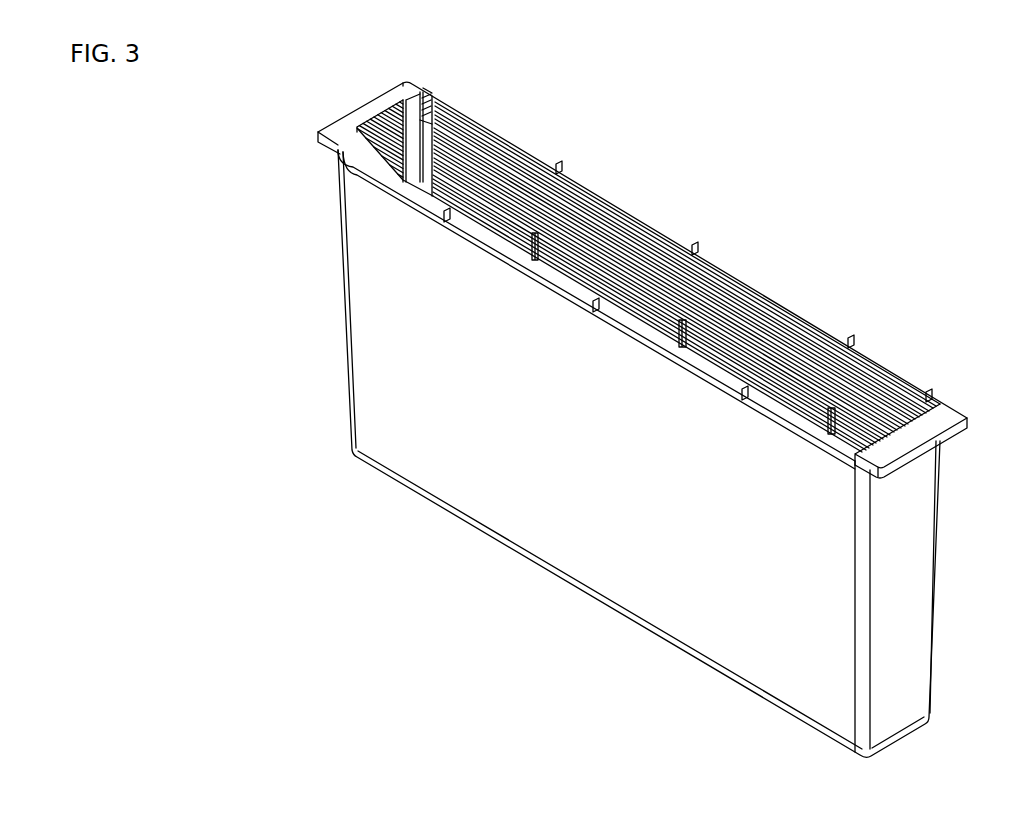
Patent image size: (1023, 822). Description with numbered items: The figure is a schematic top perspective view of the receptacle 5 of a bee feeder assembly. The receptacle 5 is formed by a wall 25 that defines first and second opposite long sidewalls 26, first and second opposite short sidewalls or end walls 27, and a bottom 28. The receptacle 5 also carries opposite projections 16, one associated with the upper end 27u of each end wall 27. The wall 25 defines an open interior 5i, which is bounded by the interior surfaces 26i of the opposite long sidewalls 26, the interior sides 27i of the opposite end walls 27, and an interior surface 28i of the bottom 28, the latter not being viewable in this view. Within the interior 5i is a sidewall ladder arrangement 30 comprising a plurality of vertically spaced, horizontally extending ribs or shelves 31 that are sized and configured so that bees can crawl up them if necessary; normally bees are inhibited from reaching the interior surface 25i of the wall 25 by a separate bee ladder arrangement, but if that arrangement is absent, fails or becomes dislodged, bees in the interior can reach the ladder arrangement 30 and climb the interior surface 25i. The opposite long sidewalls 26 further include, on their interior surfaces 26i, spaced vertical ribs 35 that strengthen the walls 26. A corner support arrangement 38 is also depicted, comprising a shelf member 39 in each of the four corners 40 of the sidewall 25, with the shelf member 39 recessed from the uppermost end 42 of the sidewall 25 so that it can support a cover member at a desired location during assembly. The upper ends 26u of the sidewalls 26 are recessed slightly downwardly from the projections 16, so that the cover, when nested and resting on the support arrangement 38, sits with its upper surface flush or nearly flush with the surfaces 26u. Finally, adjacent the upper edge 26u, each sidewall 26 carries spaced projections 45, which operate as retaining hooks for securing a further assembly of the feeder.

The receptacle 5 is at (708, 212).
The open interior 5i is at (628, 240).
The projections 16 is at (361, 112).
The wall 25 is at (457, 493).
The interior surface of wall 25i is at (494, 158).
The long sidewalls 26 is at (602, 442).
The interior surface of long sidewalls 26i is at (598, 212).
The upper ends of sidewalls 26u is at (773, 297).
The end walls 27 is at (340, 200).
The interior sides of end walls 27i is at (387, 152).
The upper end of end wall 27u is at (404, 115).
The bottom 28 is at (734, 678).
The interior surface of bottom 28i is at (738, 320).
The sidewall ladder arrangement 30 is at (861, 380).
The ribs or shelves 31 is at (533, 163).
The vertical ribs 35 is at (533, 256).
The corner support arrangement 38 is at (444, 95).
The shelf member 39 is at (423, 112).
The corners 40 is at (403, 78).
The uppermost end of sidewall 42 is at (672, 240).
The projections 45 is at (445, 228).